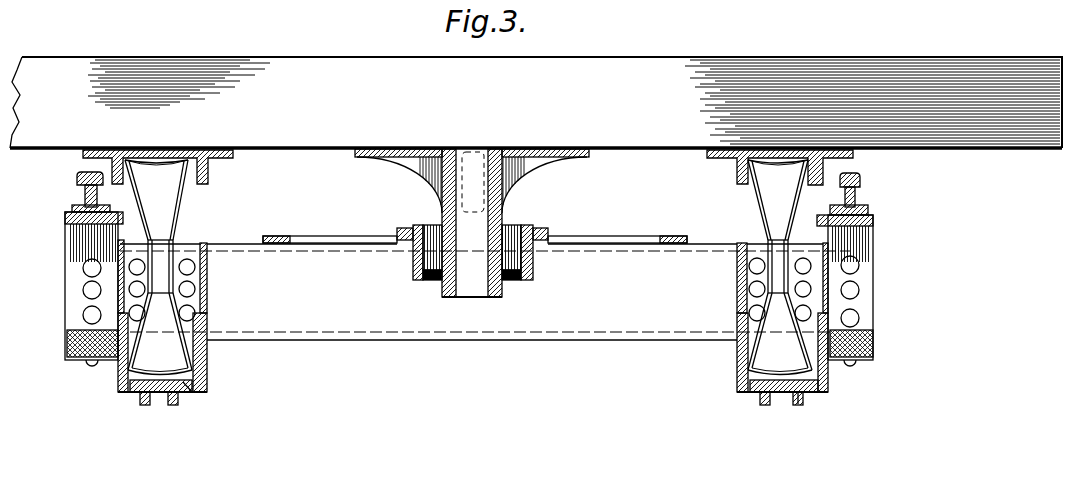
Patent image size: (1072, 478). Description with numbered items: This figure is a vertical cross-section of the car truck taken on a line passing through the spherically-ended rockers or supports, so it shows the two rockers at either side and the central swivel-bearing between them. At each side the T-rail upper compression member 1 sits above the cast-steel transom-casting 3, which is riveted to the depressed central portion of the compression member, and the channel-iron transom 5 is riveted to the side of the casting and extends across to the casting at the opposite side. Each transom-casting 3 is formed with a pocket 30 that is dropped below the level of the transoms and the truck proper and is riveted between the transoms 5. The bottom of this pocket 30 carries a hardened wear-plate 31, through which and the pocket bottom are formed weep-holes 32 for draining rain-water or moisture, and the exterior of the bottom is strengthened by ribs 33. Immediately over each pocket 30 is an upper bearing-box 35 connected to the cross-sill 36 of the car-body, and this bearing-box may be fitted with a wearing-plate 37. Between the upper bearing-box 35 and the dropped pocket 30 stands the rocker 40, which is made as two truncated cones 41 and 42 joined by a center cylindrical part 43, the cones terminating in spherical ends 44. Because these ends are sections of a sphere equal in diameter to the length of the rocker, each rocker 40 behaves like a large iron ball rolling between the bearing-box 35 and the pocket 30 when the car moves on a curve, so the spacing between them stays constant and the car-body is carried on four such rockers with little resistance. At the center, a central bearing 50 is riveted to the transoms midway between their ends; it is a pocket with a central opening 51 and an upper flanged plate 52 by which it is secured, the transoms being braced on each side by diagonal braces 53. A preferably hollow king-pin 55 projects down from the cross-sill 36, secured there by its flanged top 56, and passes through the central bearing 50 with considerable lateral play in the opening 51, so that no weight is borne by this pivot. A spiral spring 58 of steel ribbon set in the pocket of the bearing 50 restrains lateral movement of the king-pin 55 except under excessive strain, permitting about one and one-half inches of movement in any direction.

The upper compression member 1 is at (80, 182).
The transom-casting 3 is at (73, 312).
The channel-iron transom 5 is at (636, 324).
The pocket 30 is at (208, 374).
The wear-plate 31 is at (790, 404).
The weep-holes 32 is at (130, 392).
The ribs 33 is at (152, 398).
The upper bearing-box 35 is at (210, 174).
The cross-sill 36 is at (301, 147).
The wearing-plate 37 is at (173, 160).
The rocker 40 is at (170, 240).
The truncated cone 41 is at (186, 203).
The truncated cone 42 is at (208, 330).
The center cylindrical part 43 is at (207, 278).
The spherical ends 44 is at (155, 160).
The central bearing 50 is at (413, 253).
The central opening 51 is at (437, 278).
The upper flanged plate 52 is at (410, 229).
The diagonal brace 53 is at (277, 236).
The king-pin 55 is at (505, 203).
The flanged top 56 is at (372, 153).
The spiral spring 58 is at (533, 257).